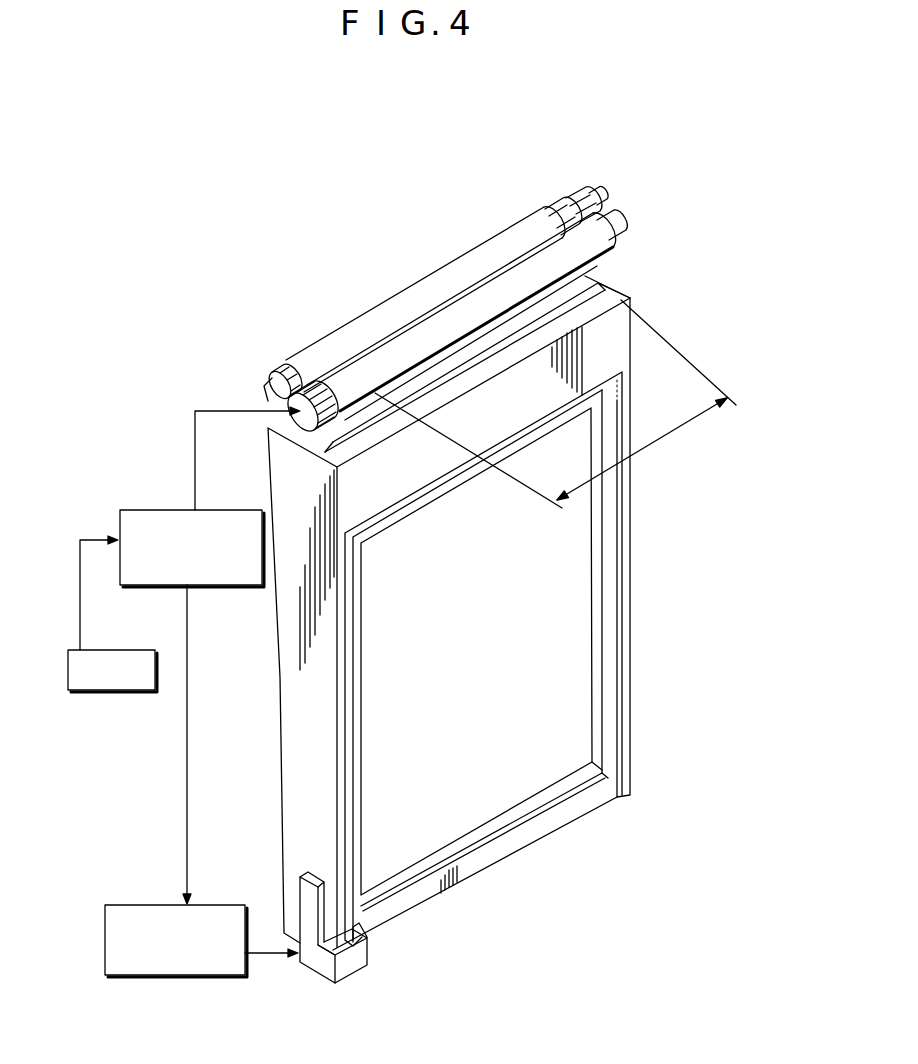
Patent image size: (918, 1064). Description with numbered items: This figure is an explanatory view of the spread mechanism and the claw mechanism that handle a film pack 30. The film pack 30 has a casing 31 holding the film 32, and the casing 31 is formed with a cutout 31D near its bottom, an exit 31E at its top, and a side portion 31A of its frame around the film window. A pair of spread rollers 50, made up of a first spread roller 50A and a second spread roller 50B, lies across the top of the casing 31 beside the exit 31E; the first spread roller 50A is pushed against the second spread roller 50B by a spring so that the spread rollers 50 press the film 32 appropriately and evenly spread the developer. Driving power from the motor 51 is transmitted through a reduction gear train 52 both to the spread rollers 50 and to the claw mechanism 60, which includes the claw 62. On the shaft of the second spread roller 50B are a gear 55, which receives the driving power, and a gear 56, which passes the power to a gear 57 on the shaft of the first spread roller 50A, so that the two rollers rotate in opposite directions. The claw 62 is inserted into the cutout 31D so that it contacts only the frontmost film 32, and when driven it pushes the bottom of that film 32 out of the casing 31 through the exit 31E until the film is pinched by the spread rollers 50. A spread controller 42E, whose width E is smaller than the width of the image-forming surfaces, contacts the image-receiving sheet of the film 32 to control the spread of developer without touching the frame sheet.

The film pack 30 is at (632, 652).
The casing 31 is at (630, 777).
The frame side portion 31A is at (600, 635).
The cutout 31D is at (353, 918).
The exit 31E is at (593, 283).
The film 32 is at (435, 815).
The spread controller 42E is at (458, 367).
The spread rollers 50 is at (488, 251).
The first spread roller 50A is at (467, 272).
The second spread roller 50B is at (627, 203).
The motor 51 is at (98, 692).
The reduction gear train 52 is at (176, 508).
The gear 55 is at (300, 424).
The gear 56 is at (350, 390).
The gear 57 is at (283, 380).
The claw mechanism 60 is at (205, 977).
The claw 62 is at (350, 962).
The width of the spread controller E is at (662, 438).